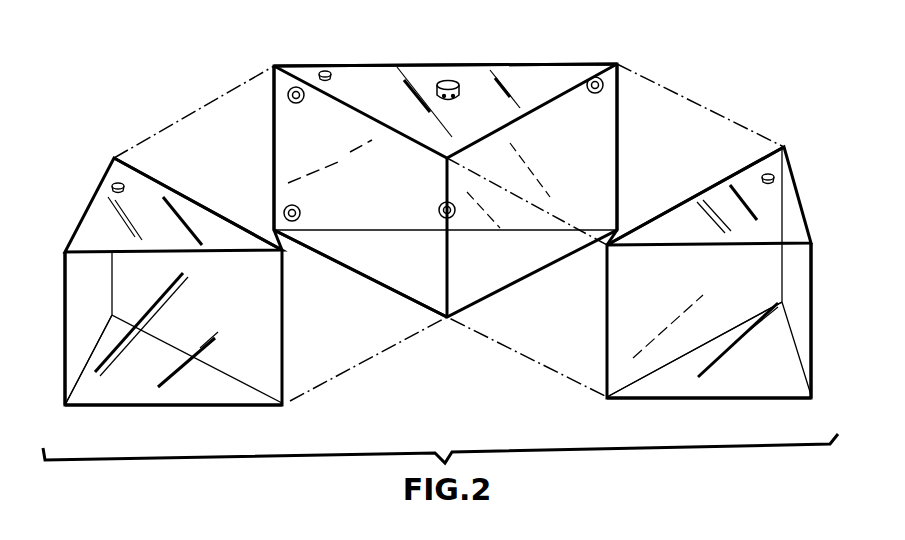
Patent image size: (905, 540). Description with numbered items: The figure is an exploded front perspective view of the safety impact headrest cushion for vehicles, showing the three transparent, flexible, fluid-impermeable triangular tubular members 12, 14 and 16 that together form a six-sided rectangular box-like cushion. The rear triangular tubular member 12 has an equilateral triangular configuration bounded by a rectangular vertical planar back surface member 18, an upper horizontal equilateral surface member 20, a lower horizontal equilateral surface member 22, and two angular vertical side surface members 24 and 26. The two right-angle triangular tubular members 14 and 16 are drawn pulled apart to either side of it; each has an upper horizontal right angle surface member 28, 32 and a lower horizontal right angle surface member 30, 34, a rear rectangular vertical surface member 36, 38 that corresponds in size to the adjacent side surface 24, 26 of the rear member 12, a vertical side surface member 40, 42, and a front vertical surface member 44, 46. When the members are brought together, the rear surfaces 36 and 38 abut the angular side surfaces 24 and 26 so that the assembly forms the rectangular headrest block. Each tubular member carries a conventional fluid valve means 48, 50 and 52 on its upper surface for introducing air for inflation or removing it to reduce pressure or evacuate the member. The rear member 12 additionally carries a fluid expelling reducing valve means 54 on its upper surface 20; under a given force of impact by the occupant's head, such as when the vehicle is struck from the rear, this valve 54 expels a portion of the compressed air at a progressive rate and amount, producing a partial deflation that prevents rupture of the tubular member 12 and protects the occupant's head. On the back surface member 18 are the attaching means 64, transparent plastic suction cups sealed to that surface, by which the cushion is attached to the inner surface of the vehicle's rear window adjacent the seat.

The triangular tubular member 12 is at (526, 63).
The triangular tubular member 14 is at (84, 214).
The triangular tubular member 16 is at (804, 214).
The back surface member 18 is at (575, 62).
The upper horizontal equilateral surface member 20 is at (297, 75).
The lower horizontal equilateral surface member 22 is at (362, 282).
The angular vertical side surface member 24 is at (275, 145).
The angular vertical side surface member 26 is at (617, 140).
The upper horizontal right angle surface member 28 is at (168, 192).
The lower horizontal right angle surface member 30 is at (188, 406).
The upper horizontal right angle surface member 32 is at (692, 202).
The lower horizontal right angle surface member 34 is at (741, 398).
The rear rectangular vertical surface member 36 is at (242, 227).
The rear rectangular vertical surface member 38 is at (665, 213).
The vertical side surface member 40 is at (65, 298).
The vertical side surface member 42 is at (812, 285).
The front vertical surface member 44 is at (82, 338).
The front vertical surface member 46 is at (625, 318).
The fluid valve means 48 is at (331, 72).
The fluid valve means 50 is at (112, 182).
The fluid valve means 52 is at (764, 172).
The fluid expelling reducing valve means 54 is at (467, 80).
The attaching means 64 is at (605, 85).